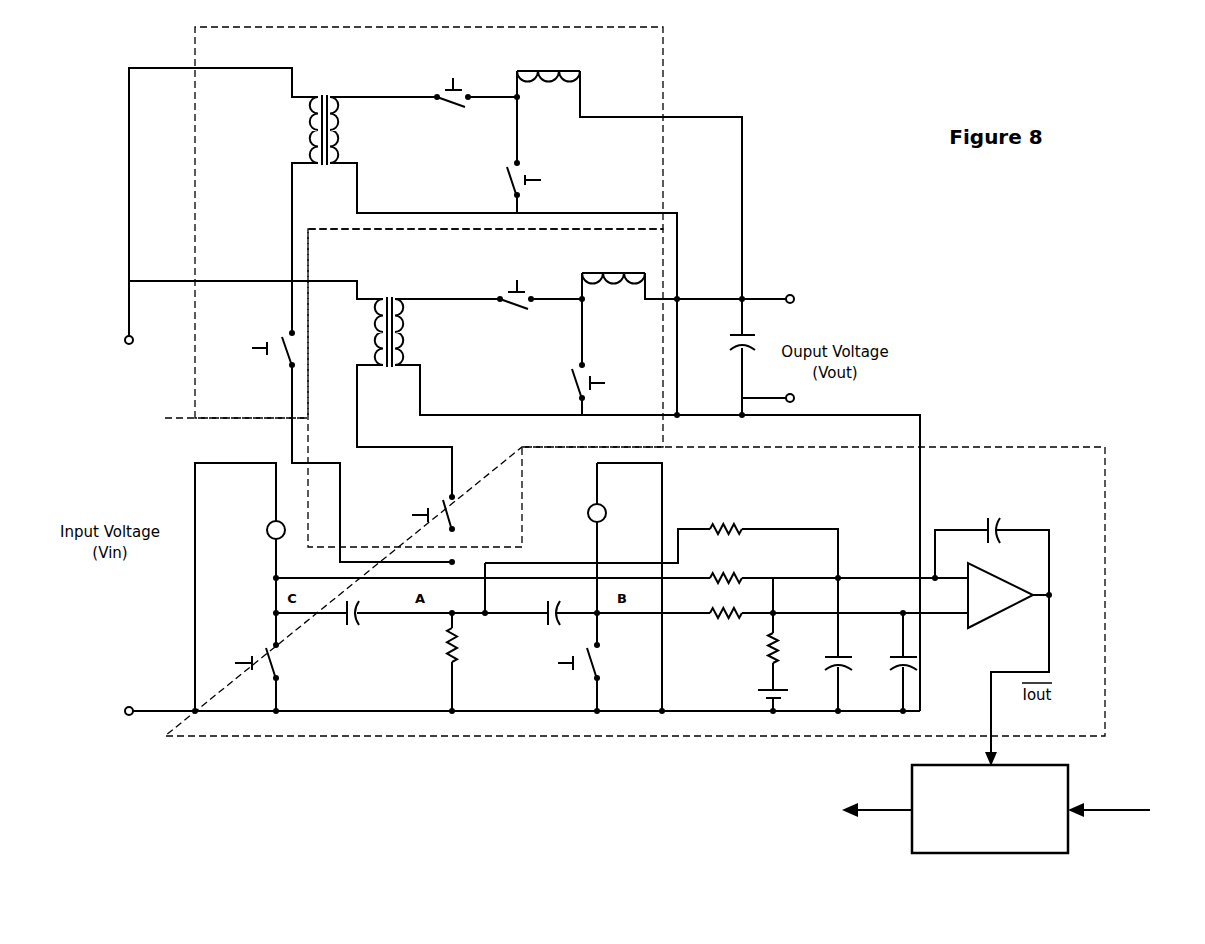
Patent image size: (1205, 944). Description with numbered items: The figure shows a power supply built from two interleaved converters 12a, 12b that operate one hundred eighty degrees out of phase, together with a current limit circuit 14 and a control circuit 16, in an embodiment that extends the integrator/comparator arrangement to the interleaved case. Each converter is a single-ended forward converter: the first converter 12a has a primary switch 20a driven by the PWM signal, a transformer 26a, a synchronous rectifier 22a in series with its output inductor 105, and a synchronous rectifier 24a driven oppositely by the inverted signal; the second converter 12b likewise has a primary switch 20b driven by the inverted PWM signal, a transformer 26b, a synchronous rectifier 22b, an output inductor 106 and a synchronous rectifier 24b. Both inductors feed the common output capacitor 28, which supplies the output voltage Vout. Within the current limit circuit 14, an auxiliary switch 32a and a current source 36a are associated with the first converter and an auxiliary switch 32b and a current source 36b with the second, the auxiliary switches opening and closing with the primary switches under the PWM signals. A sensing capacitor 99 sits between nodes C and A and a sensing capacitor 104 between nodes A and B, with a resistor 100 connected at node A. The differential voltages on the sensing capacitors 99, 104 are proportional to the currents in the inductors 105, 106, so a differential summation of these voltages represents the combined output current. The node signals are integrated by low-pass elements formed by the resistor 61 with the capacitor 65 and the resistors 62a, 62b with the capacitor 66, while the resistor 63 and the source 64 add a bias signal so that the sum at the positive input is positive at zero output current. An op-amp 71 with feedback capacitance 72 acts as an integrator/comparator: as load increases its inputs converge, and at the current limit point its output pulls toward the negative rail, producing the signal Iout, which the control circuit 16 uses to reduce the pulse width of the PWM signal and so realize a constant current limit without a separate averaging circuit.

The first interleaved power converter 12a is at (665, 69).
The second interleaved power converter 12b is at (664, 272).
The current limit circuit 14 is at (988, 445).
The control circuit 16 is at (1070, 792).
The primary switch 20a is at (283, 330).
The primary switch 20b is at (463, 510).
The synchronous rectifier 22a is at (450, 106).
The synchronous rectifier 22b is at (518, 307).
The synchronous rectifier 24a is at (527, 167).
The synchronous rectifier 24b is at (592, 367).
The transformer 26a is at (303, 126).
The transformer 26b is at (368, 326).
The output capacitor 28 is at (735, 353).
The auxiliary switch 32a is at (280, 658).
The auxiliary switch 32b is at (600, 658).
The current source 36a is at (268, 522).
The current source 36b is at (590, 508).
The resistor 61 is at (740, 522).
The resistor 62a is at (740, 570).
The resistor 62b is at (718, 623).
The resistor 63 is at (763, 642).
The source 64 is at (757, 697).
The capacitor 65 is at (827, 662).
The capacitor 66 is at (890, 660).
The op-amp 71 is at (993, 620).
The feedback capacitance 72 is at (993, 517).
The sensing capacitor 99 is at (350, 623).
The resistor 100 is at (448, 655).
The sensing capacitor 104 is at (542, 620).
The output inductor 105 is at (570, 63).
The output inductor 106 is at (597, 265).